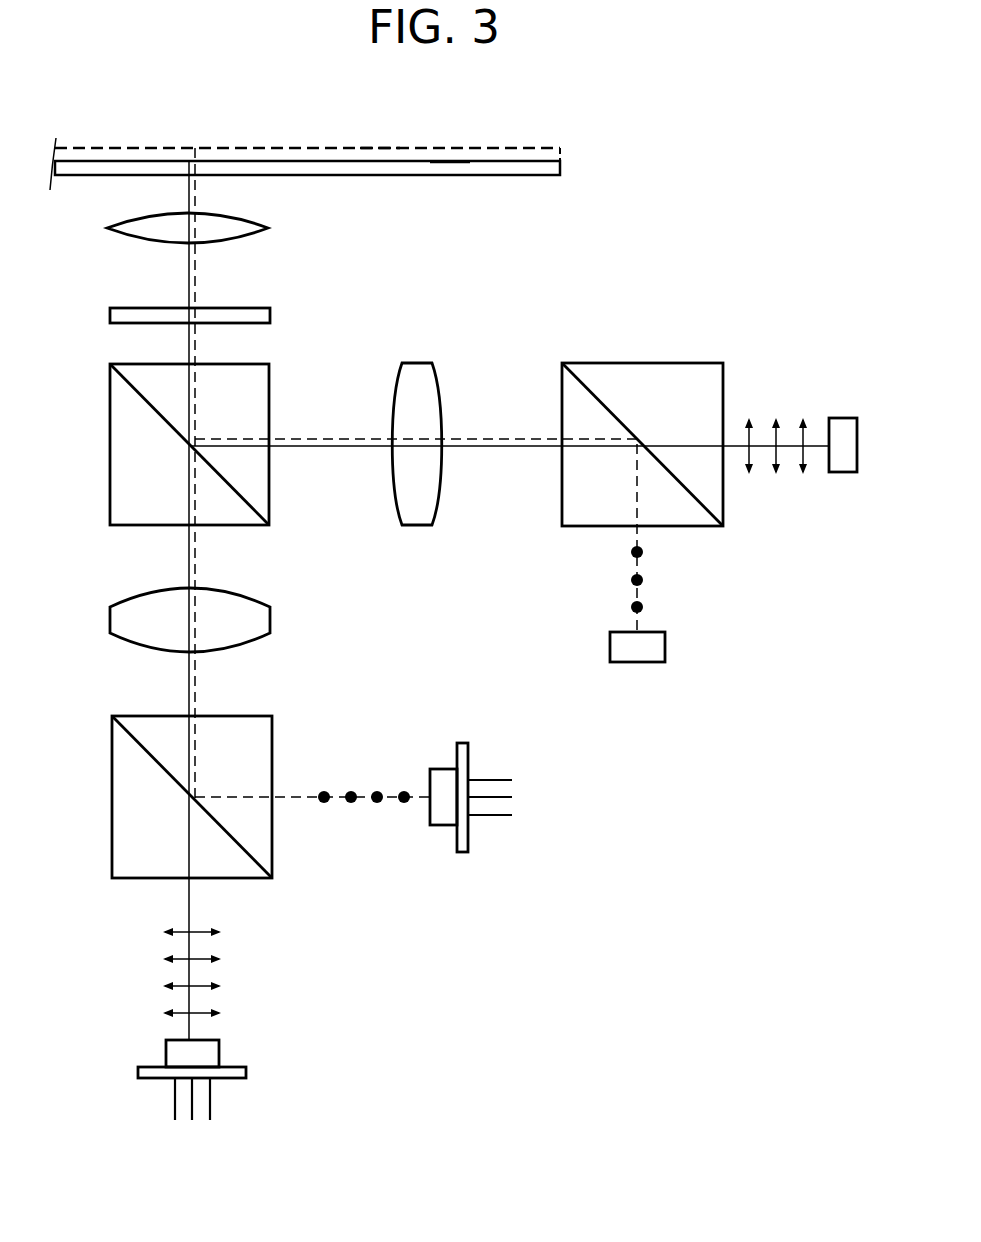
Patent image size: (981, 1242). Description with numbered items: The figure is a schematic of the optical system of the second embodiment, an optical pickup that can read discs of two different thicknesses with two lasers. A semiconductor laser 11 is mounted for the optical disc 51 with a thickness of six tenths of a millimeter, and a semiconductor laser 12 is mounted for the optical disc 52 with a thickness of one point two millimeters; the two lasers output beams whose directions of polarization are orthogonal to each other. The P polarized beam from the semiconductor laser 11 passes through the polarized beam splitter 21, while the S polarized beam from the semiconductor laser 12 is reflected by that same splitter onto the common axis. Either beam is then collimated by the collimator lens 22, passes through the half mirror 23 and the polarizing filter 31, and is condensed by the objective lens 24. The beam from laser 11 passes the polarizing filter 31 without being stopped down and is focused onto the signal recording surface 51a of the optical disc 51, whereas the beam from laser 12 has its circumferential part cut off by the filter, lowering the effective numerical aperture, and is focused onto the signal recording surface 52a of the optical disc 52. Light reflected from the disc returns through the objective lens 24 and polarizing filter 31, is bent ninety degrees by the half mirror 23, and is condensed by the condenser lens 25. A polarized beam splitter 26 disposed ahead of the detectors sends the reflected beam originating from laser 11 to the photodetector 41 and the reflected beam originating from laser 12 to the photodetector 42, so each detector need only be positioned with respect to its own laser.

The semiconductor laser 11 is at (246, 1072).
The semiconductor laser 12 is at (470, 852).
The polarized beam splitter 21 is at (120, 878).
The collimator lens 22 is at (110, 632).
The half mirror 23 is at (110, 522).
The objective lens 24 is at (125, 233).
The condenser lens 25 is at (411, 363).
The polarized beam splitter 26 is at (680, 363).
The polarizing filter 31 is at (128, 322).
The photodetector 41 is at (838, 418).
The photodetector 42 is at (648, 662).
The optical disc 51 is at (562, 170).
The signal recording surface 51a is at (442, 162).
The optical disc 52 is at (560, 152).
The signal recording surface 52a is at (380, 148).